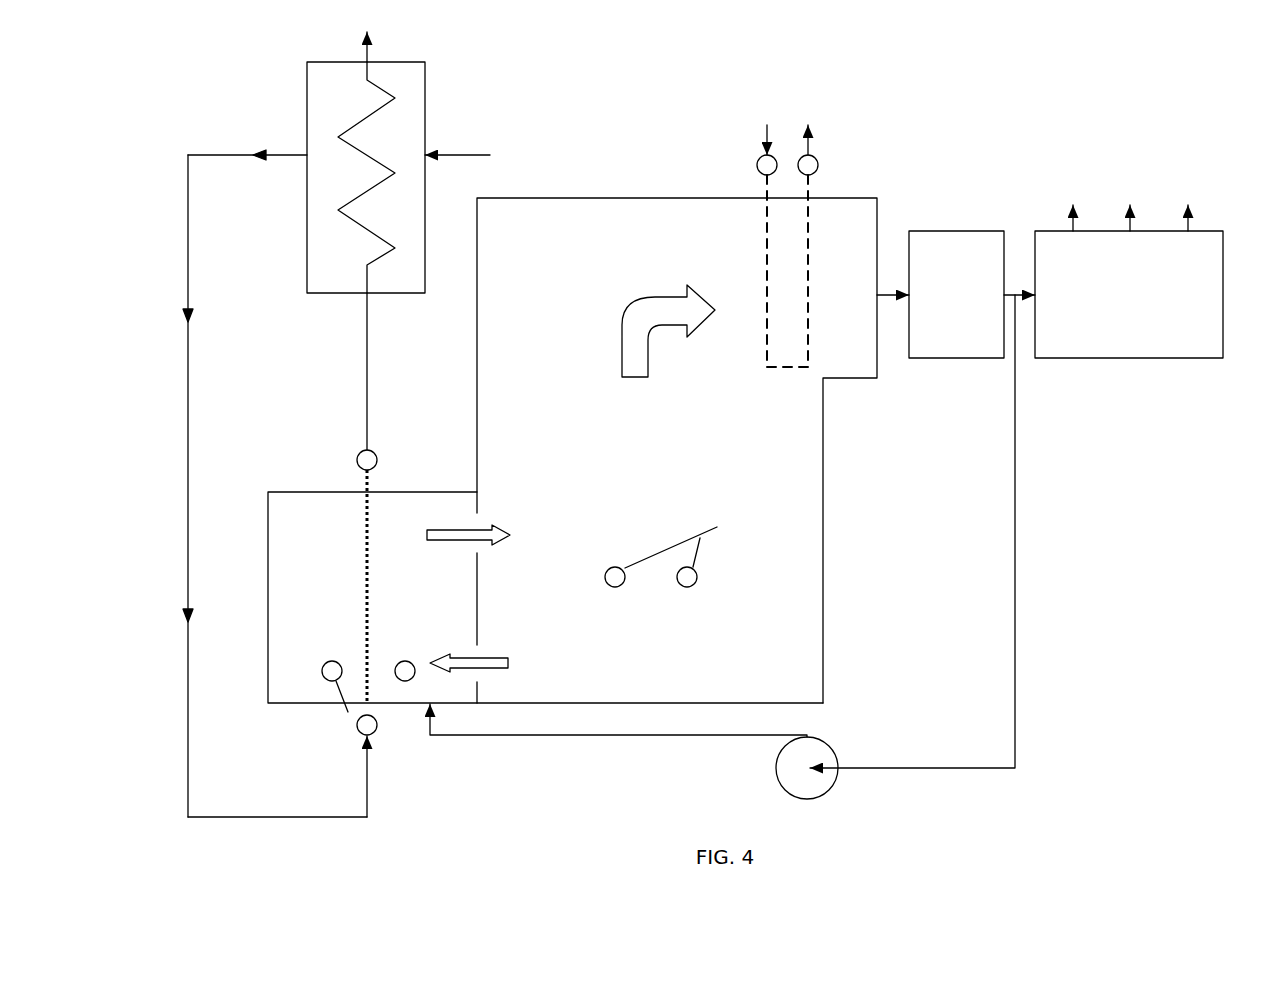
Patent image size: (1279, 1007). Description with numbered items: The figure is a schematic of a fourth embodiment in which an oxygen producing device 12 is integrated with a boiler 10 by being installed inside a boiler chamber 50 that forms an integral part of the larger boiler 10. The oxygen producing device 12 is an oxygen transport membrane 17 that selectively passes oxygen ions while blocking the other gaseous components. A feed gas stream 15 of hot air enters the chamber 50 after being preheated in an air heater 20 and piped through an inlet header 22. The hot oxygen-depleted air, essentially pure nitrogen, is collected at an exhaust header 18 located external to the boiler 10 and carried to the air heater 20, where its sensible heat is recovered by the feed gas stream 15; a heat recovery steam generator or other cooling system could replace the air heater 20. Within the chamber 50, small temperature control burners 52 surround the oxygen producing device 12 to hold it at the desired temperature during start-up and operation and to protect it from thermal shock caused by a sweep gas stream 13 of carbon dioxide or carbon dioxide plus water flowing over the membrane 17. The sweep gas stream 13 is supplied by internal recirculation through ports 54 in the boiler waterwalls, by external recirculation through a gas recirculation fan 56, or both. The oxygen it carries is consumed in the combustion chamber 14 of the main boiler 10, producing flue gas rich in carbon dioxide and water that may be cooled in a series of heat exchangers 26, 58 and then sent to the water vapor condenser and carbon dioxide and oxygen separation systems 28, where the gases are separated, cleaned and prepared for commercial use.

The boiler 10 is at (629, 198).
The oxygen producing device 12 is at (355, 606).
The sweep gas stream 13 is at (505, 657).
The combustion chamber 14 is at (632, 514).
The feed gas stream 15 is at (188, 663).
The oxygen transport membrane 17 is at (367, 565).
The exhaust header 18 is at (377, 460).
The air heater 20 is at (428, 132).
The inlet header 22 is at (374, 734).
The heat exchanger 26 is at (805, 263).
The water vapor condenser and CO2 and O2 separation systems 28 is at (1117, 334).
The boiler chamber 50 is at (266, 598).
The temperature control burners 52 is at (396, 677).
The ports 54 is at (483, 523).
The gas recirculation fan 56 is at (815, 737).
The heat exchanger 58 is at (953, 228).